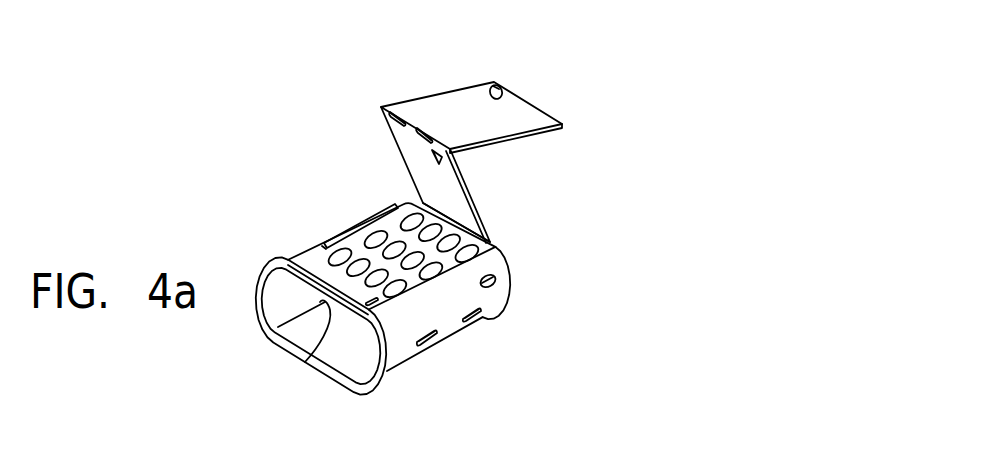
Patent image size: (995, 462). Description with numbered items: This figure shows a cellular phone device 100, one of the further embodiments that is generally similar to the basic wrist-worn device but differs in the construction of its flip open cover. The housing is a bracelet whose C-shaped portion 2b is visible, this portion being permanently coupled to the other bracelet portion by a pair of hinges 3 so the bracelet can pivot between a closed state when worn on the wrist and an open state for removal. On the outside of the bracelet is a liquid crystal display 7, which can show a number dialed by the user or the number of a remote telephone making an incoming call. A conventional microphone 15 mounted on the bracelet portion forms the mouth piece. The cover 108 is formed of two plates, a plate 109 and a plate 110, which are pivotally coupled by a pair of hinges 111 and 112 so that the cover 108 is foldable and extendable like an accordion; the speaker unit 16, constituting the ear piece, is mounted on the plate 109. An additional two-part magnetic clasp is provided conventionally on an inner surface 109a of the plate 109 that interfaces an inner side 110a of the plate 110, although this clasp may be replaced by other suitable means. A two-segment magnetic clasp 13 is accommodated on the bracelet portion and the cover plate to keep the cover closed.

The cellular phone device 100 is at (190, 171).
The C-shaped portion 2b is at (395, 367).
The hinges 3 is at (433, 347).
The liquid crystal display 7 is at (343, 230).
The magnetic clasp 13 is at (433, 156).
The microphone 15 is at (495, 280).
The speaker unit 16 is at (496, 85).
The cover 108 is at (553, 64).
The plate 109 is at (518, 117).
The inner surface 109a is at (532, 131).
The plate 110 is at (460, 198).
The inner side 110a is at (490, 242).
The hinge 111 is at (391, 117).
The hinge 112 is at (417, 132).